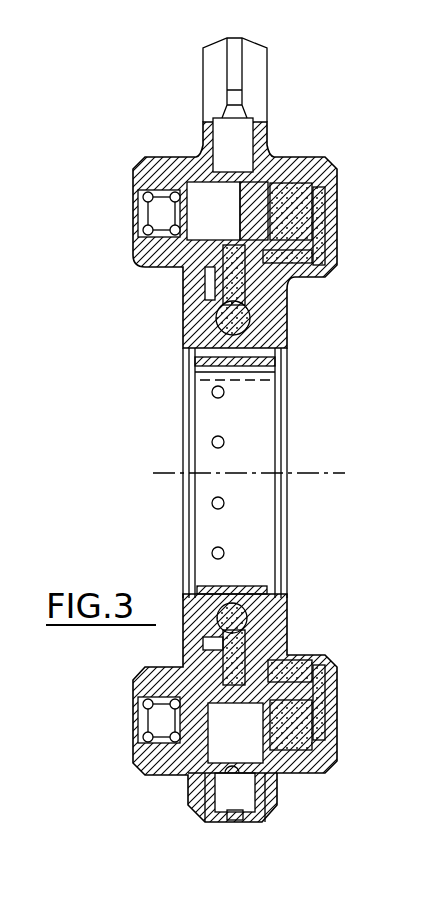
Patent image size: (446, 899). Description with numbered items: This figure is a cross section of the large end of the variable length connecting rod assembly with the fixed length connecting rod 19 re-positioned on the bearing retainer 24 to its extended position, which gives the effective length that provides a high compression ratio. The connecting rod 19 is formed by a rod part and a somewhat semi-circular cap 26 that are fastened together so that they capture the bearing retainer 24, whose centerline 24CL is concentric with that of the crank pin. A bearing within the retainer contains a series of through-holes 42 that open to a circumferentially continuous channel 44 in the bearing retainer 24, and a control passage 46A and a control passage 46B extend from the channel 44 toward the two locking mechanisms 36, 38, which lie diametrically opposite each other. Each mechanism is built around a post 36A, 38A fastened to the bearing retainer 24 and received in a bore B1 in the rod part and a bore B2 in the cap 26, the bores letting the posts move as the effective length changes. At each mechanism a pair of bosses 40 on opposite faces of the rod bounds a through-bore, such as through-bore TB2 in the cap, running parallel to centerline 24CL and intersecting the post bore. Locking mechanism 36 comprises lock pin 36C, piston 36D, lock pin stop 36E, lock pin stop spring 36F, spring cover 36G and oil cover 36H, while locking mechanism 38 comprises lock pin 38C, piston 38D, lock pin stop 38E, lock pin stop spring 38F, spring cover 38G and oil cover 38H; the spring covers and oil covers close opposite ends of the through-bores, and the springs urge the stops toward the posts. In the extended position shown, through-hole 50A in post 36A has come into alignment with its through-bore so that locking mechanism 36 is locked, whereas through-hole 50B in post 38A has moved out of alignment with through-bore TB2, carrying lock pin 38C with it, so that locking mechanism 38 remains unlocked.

The fixed length connecting rod 19 is at (268, 58).
The bearing retainer 24 is at (182, 352).
The centerline 24CL is at (315, 472).
The cap 26 is at (287, 612).
The locking mechanism 36 is at (118, 163).
The post 36A is at (198, 135).
The lock pin 36C is at (232, 220).
The piston 36D is at (287, 157).
The lock pin stop 36E is at (133, 248).
The lock pin stop spring 36F is at (133, 226).
The spring cover 36G is at (138, 178).
The oil cover 36H is at (337, 175).
The locking mechanism 38 is at (132, 780).
The post 38A is at (197, 652).
The lock pin 38C is at (248, 738).
The piston 38D is at (338, 766).
The lock pin stop 38E is at (200, 655).
The lock pin stop spring 38F is at (133, 718).
The spring cover 38G is at (145, 677).
The oil cover 38H is at (333, 707).
The bosses 40 is at (320, 160).
The through-holes 42 is at (213, 438).
The channel 44 is at (280, 312).
The control passage 46A is at (305, 262).
The control passage 46B is at (322, 655).
The through-hole 50A is at (205, 283).
The through-hole 50B is at (315, 668).
The bore B1 is at (267, 137).
The bore B2 is at (185, 785).
The through-bore TB2 is at (160, 157).